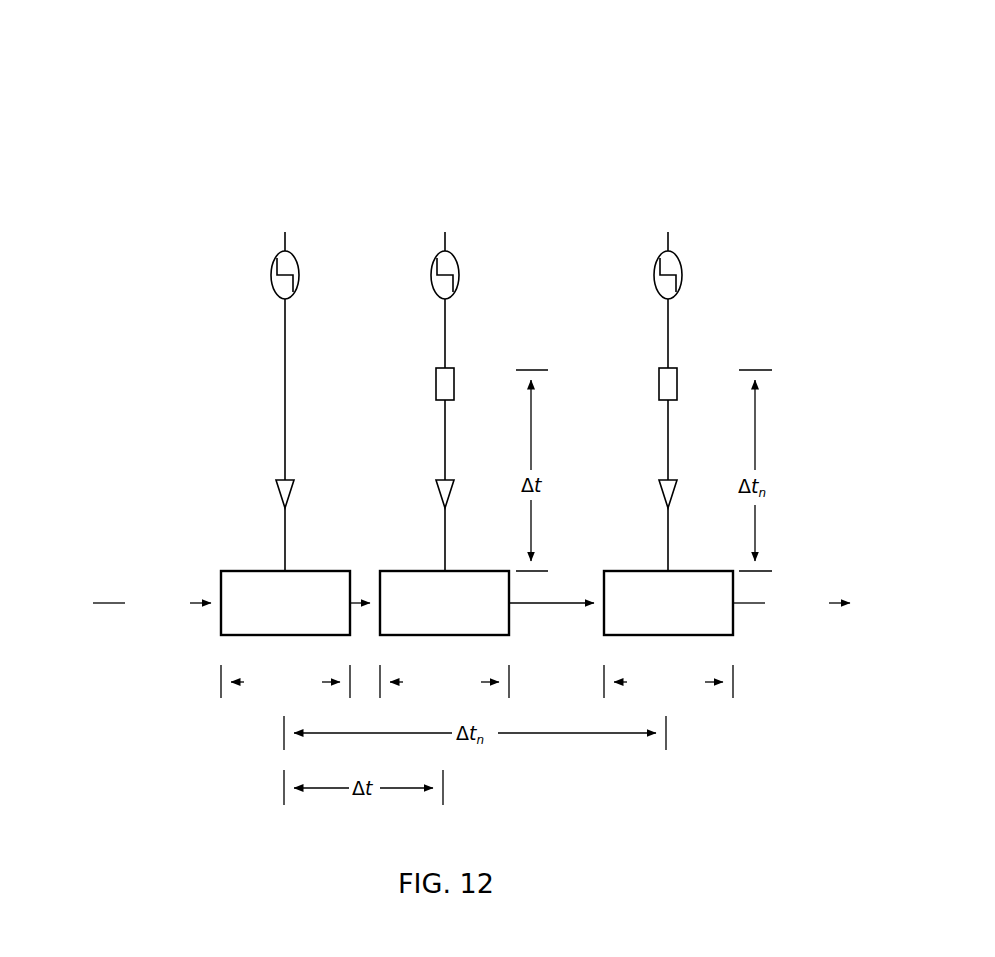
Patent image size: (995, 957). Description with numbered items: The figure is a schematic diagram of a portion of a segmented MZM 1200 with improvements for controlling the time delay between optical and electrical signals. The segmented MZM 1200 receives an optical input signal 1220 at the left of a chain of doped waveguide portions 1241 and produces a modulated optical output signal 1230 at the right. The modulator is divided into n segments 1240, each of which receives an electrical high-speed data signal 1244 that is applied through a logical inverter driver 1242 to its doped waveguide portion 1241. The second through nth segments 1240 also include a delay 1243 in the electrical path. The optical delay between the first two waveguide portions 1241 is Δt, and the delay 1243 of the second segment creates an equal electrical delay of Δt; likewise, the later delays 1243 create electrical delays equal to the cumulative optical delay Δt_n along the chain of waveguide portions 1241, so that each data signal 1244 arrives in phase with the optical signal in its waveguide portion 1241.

The segmented MZM 1200 is at (232, 202).
The optical input signal 1220 is at (152, 603).
The modulated optical output signal 1230 is at (791, 603).
The segment 1240 is at (477, 681).
The doped waveguide portion 1241 is at (477, 603).
The logical inverter driver 1242 is at (438, 493).
The delay 1243 is at (517, 382).
The electrical high-speed data signal 1244 is at (440, 275).